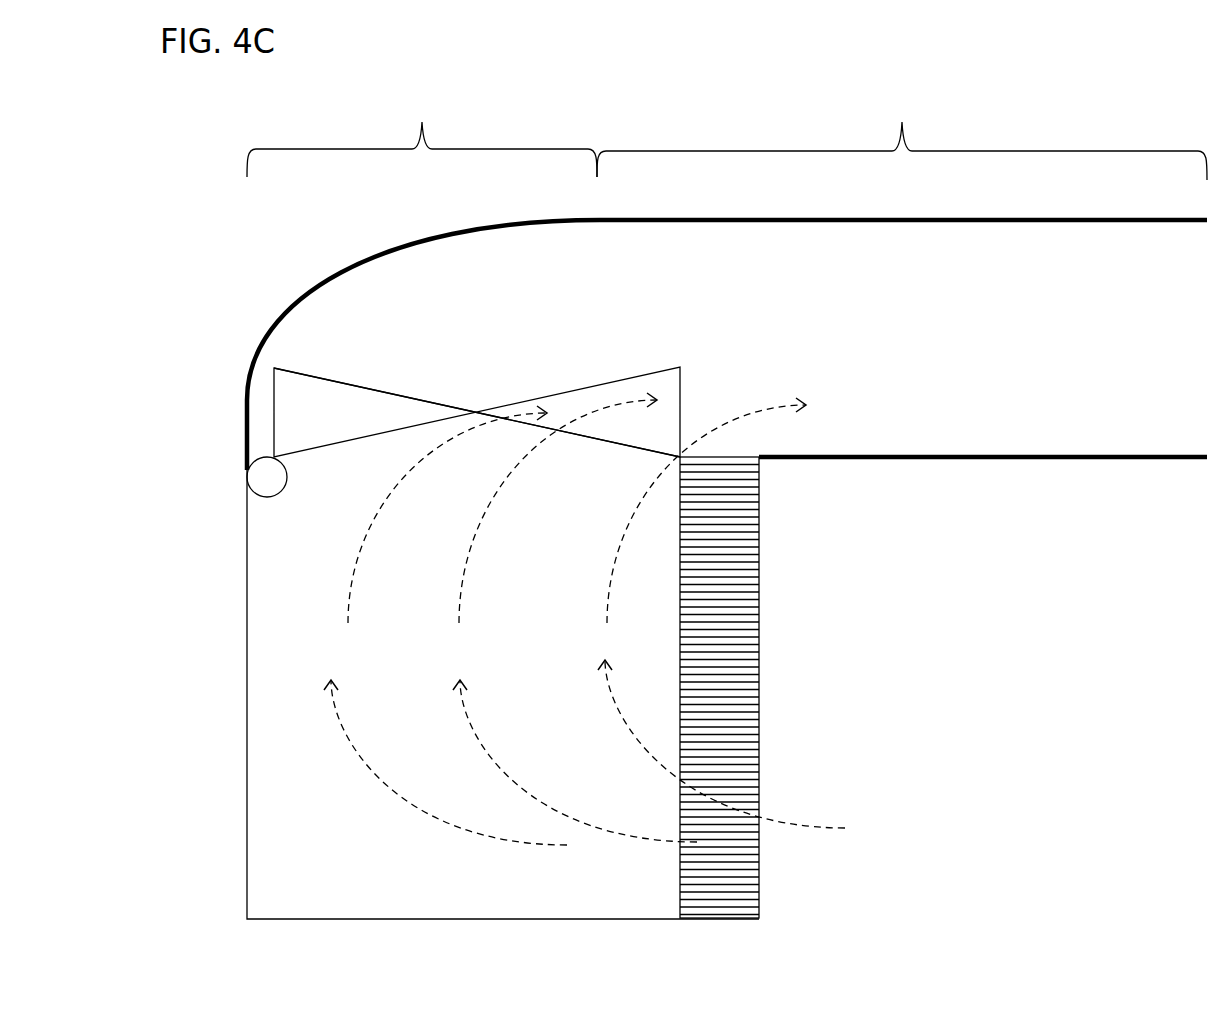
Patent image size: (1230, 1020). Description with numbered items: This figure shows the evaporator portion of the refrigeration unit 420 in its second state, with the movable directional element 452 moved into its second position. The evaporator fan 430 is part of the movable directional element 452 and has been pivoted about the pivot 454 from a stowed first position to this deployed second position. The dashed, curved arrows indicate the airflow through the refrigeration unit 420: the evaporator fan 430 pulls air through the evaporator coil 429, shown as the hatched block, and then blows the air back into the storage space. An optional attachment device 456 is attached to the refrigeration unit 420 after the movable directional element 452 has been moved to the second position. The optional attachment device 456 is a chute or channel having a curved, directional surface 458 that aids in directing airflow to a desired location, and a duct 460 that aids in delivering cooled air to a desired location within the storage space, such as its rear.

The refrigeration unit 420 is at (873, 612).
The evaporator coil 429 is at (748, 712).
The evaporator fan 430 is at (387, 409).
The movable directional element 452 is at (510, 372).
The pivot 454 is at (258, 480).
The optional attachment device 456 is at (275, 327).
The curved, directional surface 458 is at (422, 136).
The duct 460 is at (902, 137).